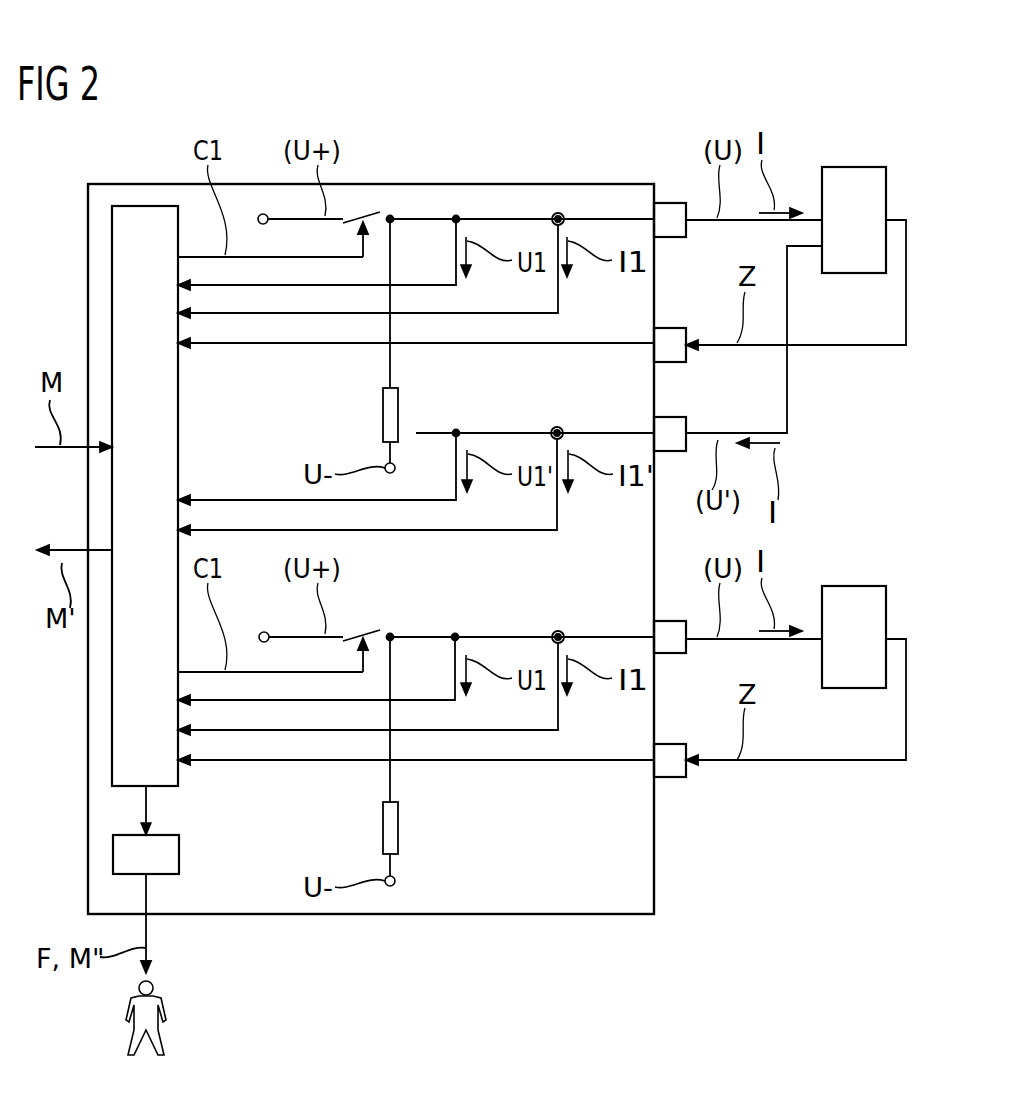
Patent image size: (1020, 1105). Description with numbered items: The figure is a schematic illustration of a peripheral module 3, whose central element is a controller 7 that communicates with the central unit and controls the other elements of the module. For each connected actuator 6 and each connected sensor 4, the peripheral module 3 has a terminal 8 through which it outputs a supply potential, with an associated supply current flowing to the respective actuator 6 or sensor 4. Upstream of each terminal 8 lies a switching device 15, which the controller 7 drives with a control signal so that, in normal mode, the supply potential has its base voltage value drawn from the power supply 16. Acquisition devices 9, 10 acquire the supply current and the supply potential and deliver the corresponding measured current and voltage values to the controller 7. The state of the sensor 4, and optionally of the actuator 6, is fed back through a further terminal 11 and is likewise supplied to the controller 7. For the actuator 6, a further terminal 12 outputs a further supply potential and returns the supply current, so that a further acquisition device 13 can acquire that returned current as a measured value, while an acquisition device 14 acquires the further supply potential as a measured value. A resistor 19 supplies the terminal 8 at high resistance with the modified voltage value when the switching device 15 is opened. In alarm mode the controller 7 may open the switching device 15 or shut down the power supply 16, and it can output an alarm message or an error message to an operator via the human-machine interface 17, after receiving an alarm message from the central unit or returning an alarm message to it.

The peripheral module 3 is at (513, 915).
The sensor 4 is at (855, 585).
The actuator 6 is at (855, 166).
The controller 7 is at (146, 205).
The terminal 8 is at (672, 201).
The acquisition device 9 is at (557, 212).
The acquisition device 10 is at (456, 214).
The further terminal 11 is at (670, 326).
The further terminal 12 is at (668, 455).
The further acquisition device 13 is at (557, 427).
The acquisition device 14 is at (456, 430).
The switching device 15 is at (368, 210).
The power supply 16 is at (263, 214).
The human-machine interface 17 is at (113, 855).
The resistor 19 is at (383, 412).